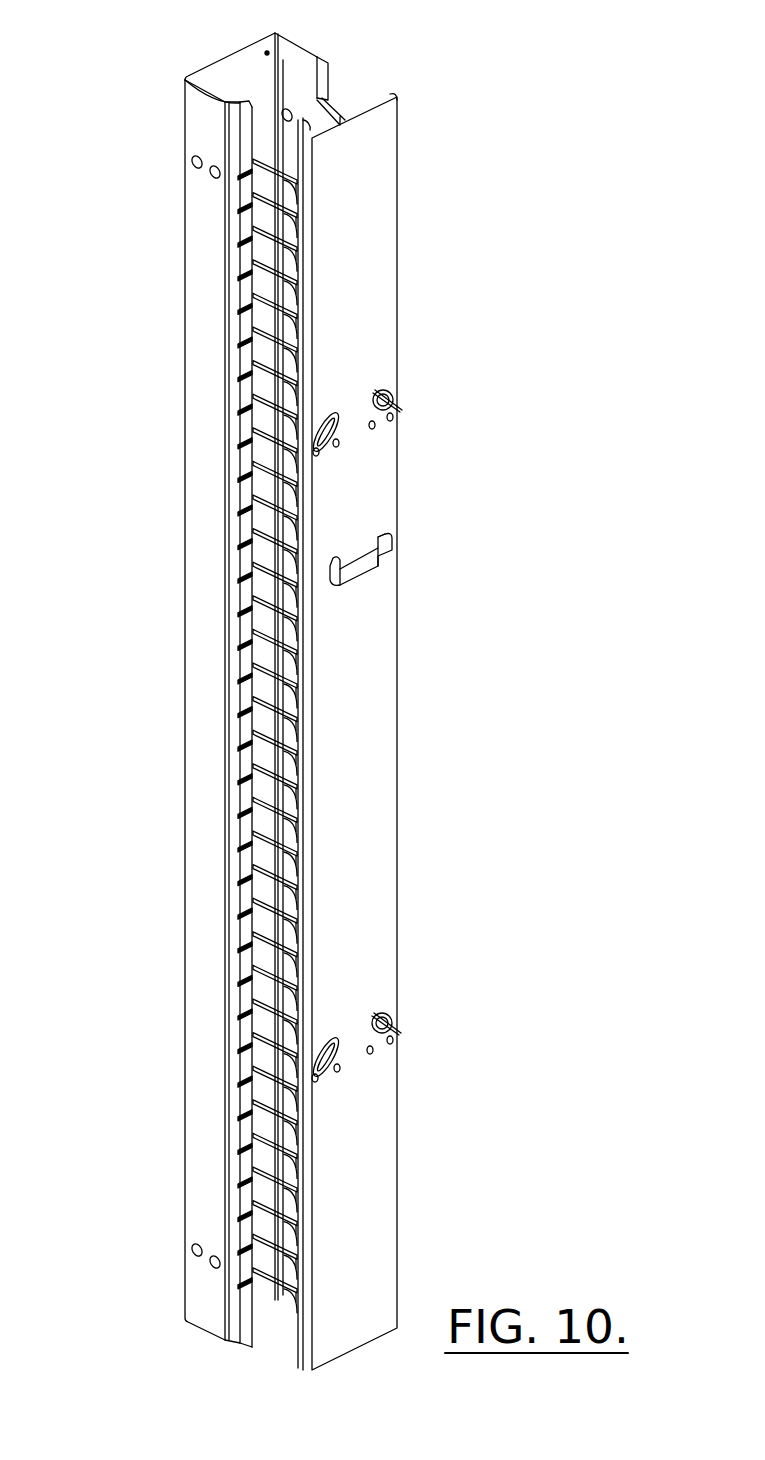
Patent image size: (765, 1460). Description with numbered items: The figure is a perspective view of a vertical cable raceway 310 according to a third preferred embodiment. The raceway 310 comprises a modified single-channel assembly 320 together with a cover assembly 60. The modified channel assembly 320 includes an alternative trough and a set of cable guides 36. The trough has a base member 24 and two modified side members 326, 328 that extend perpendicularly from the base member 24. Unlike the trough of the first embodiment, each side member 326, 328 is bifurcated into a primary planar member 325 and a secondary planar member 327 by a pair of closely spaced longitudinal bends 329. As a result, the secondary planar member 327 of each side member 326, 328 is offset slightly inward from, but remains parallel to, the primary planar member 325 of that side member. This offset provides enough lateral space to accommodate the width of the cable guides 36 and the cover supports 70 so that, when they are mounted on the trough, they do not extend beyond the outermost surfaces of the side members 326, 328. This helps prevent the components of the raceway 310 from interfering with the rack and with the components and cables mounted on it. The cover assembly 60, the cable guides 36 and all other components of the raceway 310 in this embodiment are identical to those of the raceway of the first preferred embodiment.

The vertical cable raceway 310 is at (118, 1142).
The modified single-channel assembly 320 is at (200, 500).
The primary planar member 325 is at (195, 130).
The modified side member 326 is at (208, 195).
The secondary planar member 327 is at (248, 110).
The modified side member 328 is at (293, 53).
The longitudinal bends 329 is at (320, 60).
The base member 24 is at (238, 62).
The cover assembly 60 is at (365, 260).
The cover support 70 is at (277, 418).
The cable guides 36 is at (263, 748).